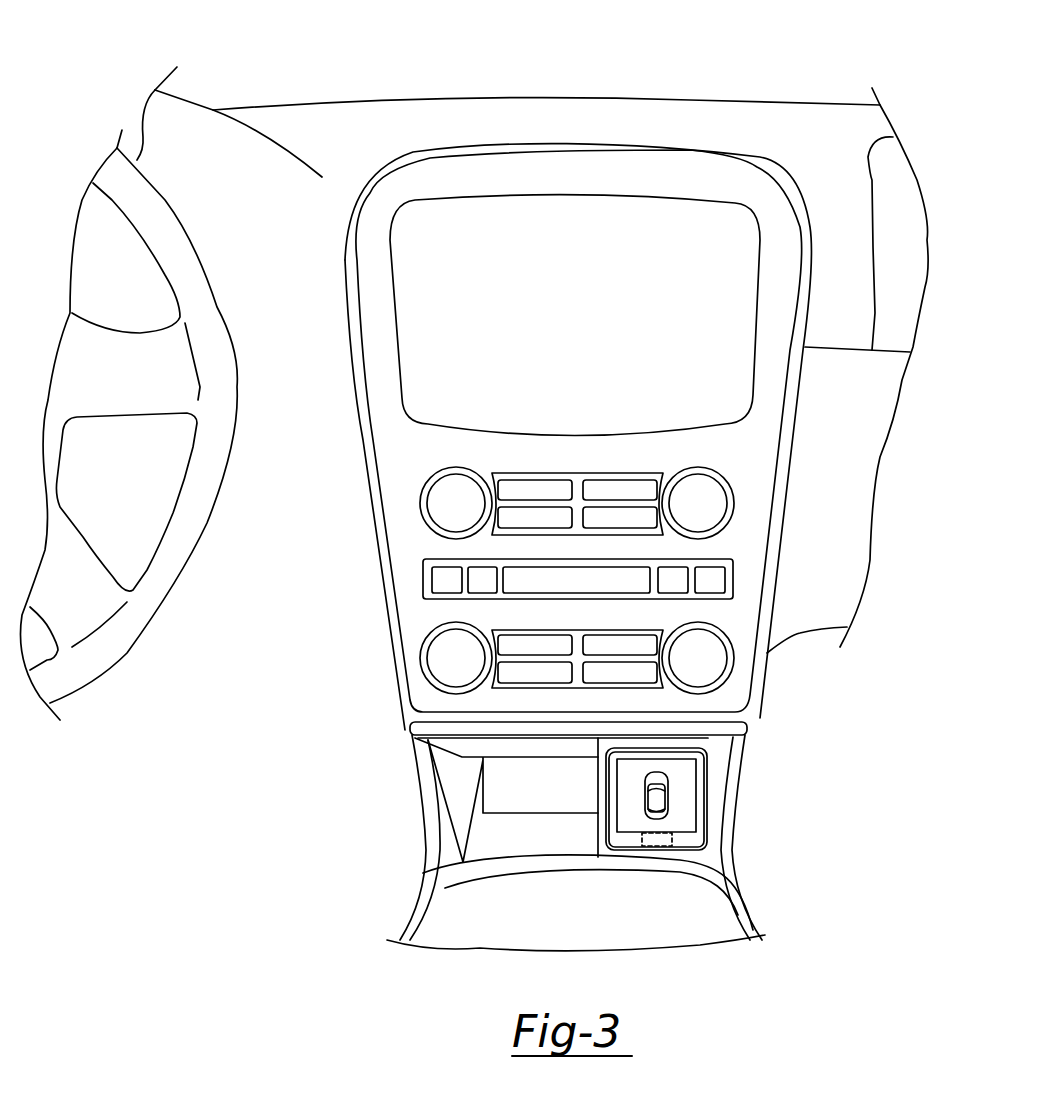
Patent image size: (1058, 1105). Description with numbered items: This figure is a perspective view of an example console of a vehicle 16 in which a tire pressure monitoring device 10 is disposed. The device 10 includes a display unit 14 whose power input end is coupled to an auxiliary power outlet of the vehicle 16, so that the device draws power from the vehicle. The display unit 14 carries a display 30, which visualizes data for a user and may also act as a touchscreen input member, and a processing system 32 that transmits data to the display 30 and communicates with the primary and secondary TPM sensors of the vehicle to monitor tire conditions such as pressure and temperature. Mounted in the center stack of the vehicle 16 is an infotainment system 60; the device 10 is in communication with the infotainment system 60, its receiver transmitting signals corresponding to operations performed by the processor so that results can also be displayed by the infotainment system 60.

The vehicle 16 is at (677, 68).
The infotainment system 60 is at (460, 180).
The tire pressure monitoring (TPM) device 10 is at (713, 745).
The display unit 14 is at (680, 850).
The display 30 is at (683, 790).
The processing system 32 is at (637, 835).